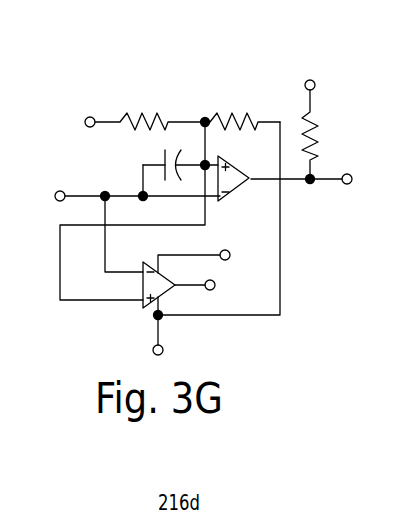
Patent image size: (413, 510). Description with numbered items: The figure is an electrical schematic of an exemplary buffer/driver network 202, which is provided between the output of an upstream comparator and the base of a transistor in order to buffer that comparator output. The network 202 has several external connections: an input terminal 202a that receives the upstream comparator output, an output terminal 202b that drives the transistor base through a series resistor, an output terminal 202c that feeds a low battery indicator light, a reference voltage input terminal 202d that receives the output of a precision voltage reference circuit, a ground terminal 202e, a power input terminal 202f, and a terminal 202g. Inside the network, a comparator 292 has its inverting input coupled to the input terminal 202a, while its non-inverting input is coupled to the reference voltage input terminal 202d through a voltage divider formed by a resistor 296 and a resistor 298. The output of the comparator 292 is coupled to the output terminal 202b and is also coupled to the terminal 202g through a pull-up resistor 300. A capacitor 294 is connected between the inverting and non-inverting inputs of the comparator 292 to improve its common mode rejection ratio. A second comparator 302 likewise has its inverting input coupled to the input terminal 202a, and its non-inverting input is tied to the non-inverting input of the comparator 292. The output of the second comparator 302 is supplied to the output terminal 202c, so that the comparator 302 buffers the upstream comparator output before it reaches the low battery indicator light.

The buffer/driver network 202 is at (191, 75).
The input terminal 202a is at (55, 197).
The output terminal 202b is at (345, 184).
The output terminal 202c is at (209, 290).
The reference voltage input terminal 202d is at (85, 123).
The ground terminal 202e is at (163, 352).
The power input terminal 202f is at (246, 236).
The terminal 202g is at (316, 88).
The comparator 292 is at (245, 175).
The capacitor 294 is at (163, 160).
The resistor 296 is at (146, 113).
The resistor 298 is at (250, 121).
The pull-up resistor 300 is at (322, 137).
The second comparator 302 is at (172, 283).